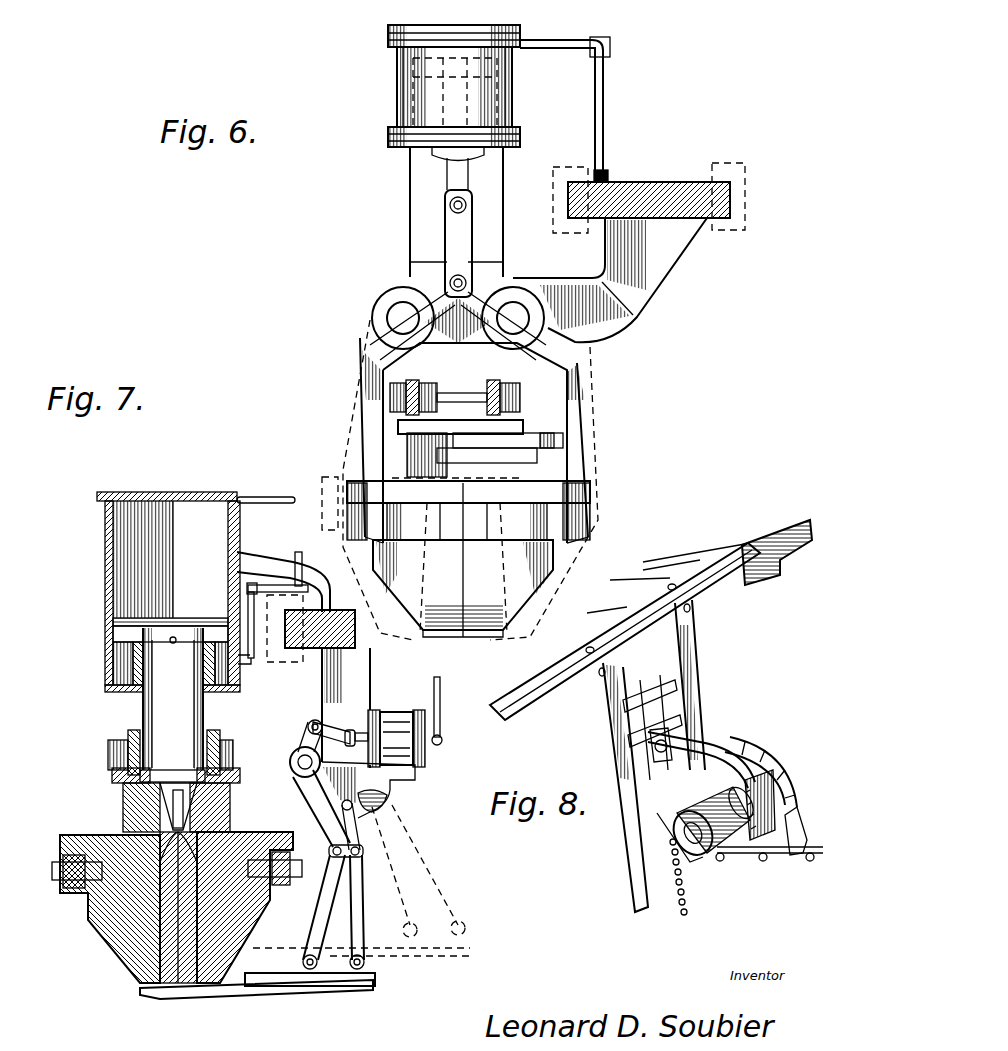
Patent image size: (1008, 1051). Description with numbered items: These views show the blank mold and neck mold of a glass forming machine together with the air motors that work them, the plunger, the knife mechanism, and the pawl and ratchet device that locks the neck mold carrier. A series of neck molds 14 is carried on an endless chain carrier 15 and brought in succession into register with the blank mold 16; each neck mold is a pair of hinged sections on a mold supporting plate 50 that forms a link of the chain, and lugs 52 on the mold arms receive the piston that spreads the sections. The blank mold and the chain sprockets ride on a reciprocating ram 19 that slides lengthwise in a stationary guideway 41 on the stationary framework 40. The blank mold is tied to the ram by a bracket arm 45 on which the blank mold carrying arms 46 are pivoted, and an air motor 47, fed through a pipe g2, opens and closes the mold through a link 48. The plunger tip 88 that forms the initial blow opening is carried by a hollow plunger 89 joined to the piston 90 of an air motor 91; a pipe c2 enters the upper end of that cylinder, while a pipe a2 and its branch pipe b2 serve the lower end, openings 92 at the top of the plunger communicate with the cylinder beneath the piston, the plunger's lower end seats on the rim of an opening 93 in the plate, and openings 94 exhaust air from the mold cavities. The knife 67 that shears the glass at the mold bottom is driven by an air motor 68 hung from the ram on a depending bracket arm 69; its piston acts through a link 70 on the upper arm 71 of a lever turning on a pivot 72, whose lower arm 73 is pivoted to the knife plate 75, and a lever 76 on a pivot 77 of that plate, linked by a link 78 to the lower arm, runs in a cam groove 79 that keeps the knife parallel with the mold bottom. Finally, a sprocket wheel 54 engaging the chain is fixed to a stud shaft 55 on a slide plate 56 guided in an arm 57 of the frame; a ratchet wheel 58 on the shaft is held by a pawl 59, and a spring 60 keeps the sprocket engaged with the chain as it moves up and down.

In FIG. 6, the air motor 47 is at (415, 96).
In FIG. 6, the pipe g2 is at (602, 100).
In FIG. 7, the pipe g2 is at (441, 710).
In FIG. 6, the ram 19 is at (672, 192).
In FIG. 7, the ram 19 is at (310, 660).
In FIG. 8, the ram 19 is at (782, 558).
In FIG. 6, the stationary guideway 41 is at (736, 166).
In FIG. 6, the link 48 is at (455, 247).
In FIG. 6, the bracket arm 45 is at (652, 280).
In FIG. 6, the blank mold carrying arms 46 is at (372, 378).
In FIG. 7, the blank mold carrying arms 46 is at (72, 888).
In FIG. 6, the endless chain carrier 15 is at (474, 386).
In FIG. 7, the endless chain carrier 15 is at (125, 740).
In FIG. 8, the endless chain carrier 15 is at (800, 862).
In FIG. 6, the mold supporting plate 50 is at (522, 422).
In FIG. 7, the mold supporting plate 50 is at (112, 776).
In FIG. 6, the lugs 52 is at (556, 432).
In FIG. 6, the neck mold 14 is at (418, 457).
In FIG. 7, the neck mold 14 is at (135, 800).
In FIG. 6, the blank mold 16 is at (560, 550).
In FIG. 7, the blank mold 16 is at (130, 948).
In FIG. 7, the pipe c2 is at (272, 491).
In FIG. 7, the air motor 91 is at (105, 565).
In FIG. 7, the branch pipe b2 is at (296, 562).
In FIG. 7, the openings 92 is at (178, 636).
In FIG. 7, the piston 90 is at (118, 632).
In FIG. 7, the pipe a2 is at (252, 660).
In FIG. 7, the hollow plunger 89 is at (208, 700).
In FIG. 7, the openings 94 is at (208, 722).
In FIG. 7, the depending bracket arm 69 is at (315, 720).
In FIG. 7, the link 70 is at (328, 725).
In FIG. 7, the air motor 68 is at (398, 716).
In FIG. 7, the upper arm 71 is at (303, 741).
In FIG. 7, the opening 93 is at (210, 766).
In FIG. 7, the cam groove 79 is at (395, 782).
In FIG. 7, the pivot 72 is at (296, 774).
In FIG. 7, the plunger tip 88 is at (222, 815).
In FIG. 7, the link 78 is at (350, 858).
In FIG. 7, the lower arm 73 is at (318, 912).
In FIG. 7, the lever 76 is at (358, 922).
In FIG. 7, the pivot 77 is at (366, 963).
In FIG. 7, the knife plate 75 is at (352, 988).
In FIG. 7, the knife 67 is at (210, 998).
In FIG. 8, the stationary framework 40 is at (526, 702).
In FIG. 8, the arm 57 is at (634, 869).
In FIG. 8, the pawl 59 is at (700, 740).
In FIG. 8, the sprocket wheel 54 is at (762, 748).
In FIG. 8, the ratchet wheel 58 is at (790, 790).
In FIG. 8, the slide plate 56 is at (672, 825).
In FIG. 8, the stud shaft 55 is at (705, 860).
In FIG. 8, the spring 60 is at (690, 900).